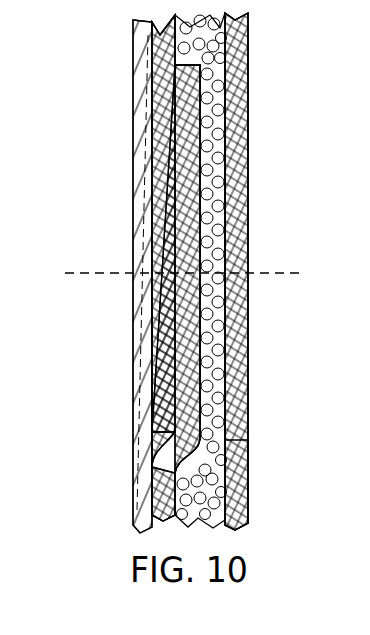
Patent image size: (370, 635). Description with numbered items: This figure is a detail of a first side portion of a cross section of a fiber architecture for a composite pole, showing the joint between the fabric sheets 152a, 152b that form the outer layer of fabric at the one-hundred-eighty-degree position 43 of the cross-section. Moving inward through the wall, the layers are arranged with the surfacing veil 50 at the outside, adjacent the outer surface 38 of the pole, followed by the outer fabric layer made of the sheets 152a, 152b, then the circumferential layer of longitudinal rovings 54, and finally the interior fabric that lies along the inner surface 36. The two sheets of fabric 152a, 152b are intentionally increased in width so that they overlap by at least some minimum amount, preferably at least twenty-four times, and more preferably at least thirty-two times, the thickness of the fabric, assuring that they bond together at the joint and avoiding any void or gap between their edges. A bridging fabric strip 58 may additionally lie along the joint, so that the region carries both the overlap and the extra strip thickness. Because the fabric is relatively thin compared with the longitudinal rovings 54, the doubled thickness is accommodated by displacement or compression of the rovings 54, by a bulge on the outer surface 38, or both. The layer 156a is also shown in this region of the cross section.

The inner surface 36 is at (249, 122).
The outer surface 38 is at (133, 235).
The 180° position 43 is at (82, 273).
The surfacing veil 50 is at (138, 366).
The longitudinal rovings 54 is at (212, 382).
The bridging fabric strip 58 is at (195, 280).
The fabric sheet 152a is at (152, 62).
The fabric sheet 152b is at (153, 477).
The outer layer end 156a is at (237, 453).